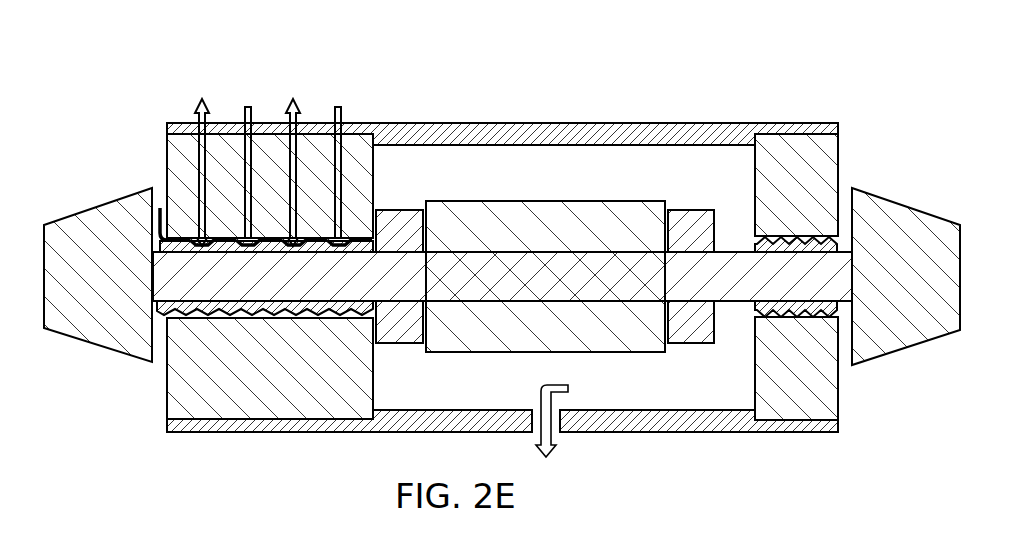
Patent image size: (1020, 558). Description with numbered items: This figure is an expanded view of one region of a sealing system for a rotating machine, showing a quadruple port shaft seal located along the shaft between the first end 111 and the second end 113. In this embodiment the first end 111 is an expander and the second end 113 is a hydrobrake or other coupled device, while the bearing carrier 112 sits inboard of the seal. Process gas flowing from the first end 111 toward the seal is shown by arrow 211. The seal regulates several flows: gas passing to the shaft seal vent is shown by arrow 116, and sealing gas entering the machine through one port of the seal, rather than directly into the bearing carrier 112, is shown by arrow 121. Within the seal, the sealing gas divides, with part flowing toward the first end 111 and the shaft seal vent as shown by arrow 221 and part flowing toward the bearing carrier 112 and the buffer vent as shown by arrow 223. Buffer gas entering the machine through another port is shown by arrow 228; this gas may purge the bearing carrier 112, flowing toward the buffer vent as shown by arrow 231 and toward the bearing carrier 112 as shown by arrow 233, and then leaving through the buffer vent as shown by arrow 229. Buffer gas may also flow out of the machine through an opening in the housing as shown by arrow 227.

The first end 111 is at (112, 285).
The bearing carrier 112 is at (556, 191).
The second end 113 is at (919, 285).
The arrow indicating flow to the shaft seal vent 116 is at (198, 117).
The arrow indicating sealing gas flow 121 is at (248, 106).
The arrow indicating process gas flow 211 is at (153, 184).
The arrow indicating sealing gas flow toward the first end 221 is at (222, 254).
The arrow indicating sealing gas flow toward the bearing carrier 223 is at (260, 254).
The arrow indicating buffer gas outflow 227 is at (537, 448).
The arrow indicating buffer gas inflow 228 is at (351, 107).
The arrow indicating buffer gas flow through the buffer vent 229 is at (301, 97).
The arrow indicating buffer gas flow toward the buffer vent 231 is at (320, 254).
The arrow indicating buffer gas flow toward the bearing carrier 233 is at (357, 254).